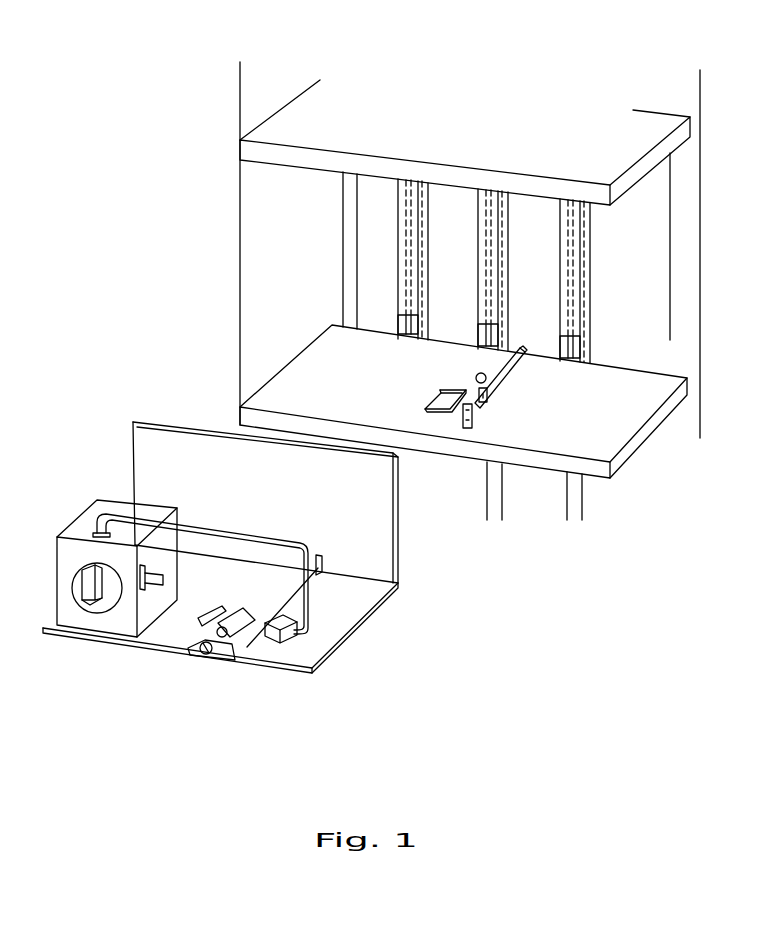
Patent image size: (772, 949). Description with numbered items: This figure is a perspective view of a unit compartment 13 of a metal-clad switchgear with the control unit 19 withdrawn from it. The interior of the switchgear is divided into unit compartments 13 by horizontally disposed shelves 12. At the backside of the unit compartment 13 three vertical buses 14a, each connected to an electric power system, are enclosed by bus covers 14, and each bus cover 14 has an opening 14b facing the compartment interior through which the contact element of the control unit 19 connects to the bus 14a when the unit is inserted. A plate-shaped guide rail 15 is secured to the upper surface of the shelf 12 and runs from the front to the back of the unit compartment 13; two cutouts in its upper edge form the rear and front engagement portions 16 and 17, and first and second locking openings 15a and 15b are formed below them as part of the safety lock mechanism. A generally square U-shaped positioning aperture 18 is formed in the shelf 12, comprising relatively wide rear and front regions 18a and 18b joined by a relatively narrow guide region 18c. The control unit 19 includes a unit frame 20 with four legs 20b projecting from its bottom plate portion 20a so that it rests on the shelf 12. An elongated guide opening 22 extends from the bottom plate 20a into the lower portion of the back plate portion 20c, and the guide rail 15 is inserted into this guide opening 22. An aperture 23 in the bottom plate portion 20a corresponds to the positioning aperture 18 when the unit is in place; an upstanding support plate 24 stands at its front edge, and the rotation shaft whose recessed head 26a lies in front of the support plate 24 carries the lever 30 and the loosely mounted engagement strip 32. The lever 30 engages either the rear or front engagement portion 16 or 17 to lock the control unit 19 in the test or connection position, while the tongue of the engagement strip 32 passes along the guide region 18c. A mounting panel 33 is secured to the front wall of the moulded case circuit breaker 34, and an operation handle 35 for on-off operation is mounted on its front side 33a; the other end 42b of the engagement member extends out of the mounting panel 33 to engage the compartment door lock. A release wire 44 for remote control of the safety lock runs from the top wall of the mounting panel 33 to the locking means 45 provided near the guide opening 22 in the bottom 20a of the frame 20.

The shelf 12 is at (298, 107).
The unit compartment 13 is at (258, 221).
The bus cover 14 is at (655, 262).
The bus 14a is at (408, 250).
The opening 14b is at (400, 322).
The guide rail 15 is at (522, 350).
The first locking opening 15a is at (488, 396).
The second locking opening 15b is at (473, 414).
The rear engagement portion 16 is at (510, 362).
The front engagement portion 17 is at (481, 380).
The positioning aperture 18 is at (452, 385).
The rear region 18a is at (442, 391).
The front region 18b is at (428, 410).
The guide region 18c is at (434, 404).
The control unit 19 is at (128, 405).
The unit frame 20 is at (385, 618).
The bottom plate portion 20a is at (315, 662).
The leg 20b is at (278, 668).
The back plate portion 20c is at (390, 534).
The guide opening 22 is at (318, 576).
The aperture 23 is at (238, 650).
The support plate 24 is at (192, 650).
The head 26a is at (206, 655).
The lever 30 is at (260, 652).
The engagement strip 32 is at (218, 616).
The mounting panel 33 is at (70, 536).
The front side 33a is at (68, 618).
The moulded case circuit breaker 34 is at (97, 505).
The operation handle 35 is at (99, 605).
The other end of engagement member 42b is at (165, 585).
The release wire 44 is at (250, 547).
The locking means 45 is at (325, 645).